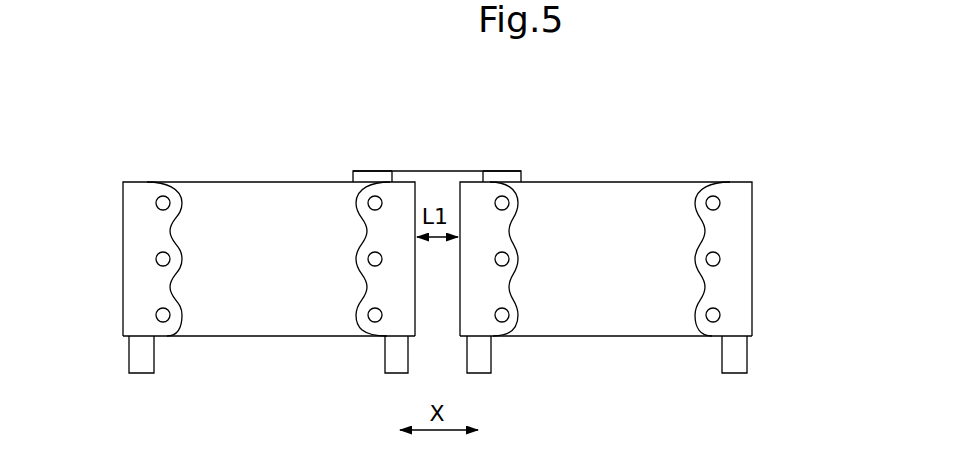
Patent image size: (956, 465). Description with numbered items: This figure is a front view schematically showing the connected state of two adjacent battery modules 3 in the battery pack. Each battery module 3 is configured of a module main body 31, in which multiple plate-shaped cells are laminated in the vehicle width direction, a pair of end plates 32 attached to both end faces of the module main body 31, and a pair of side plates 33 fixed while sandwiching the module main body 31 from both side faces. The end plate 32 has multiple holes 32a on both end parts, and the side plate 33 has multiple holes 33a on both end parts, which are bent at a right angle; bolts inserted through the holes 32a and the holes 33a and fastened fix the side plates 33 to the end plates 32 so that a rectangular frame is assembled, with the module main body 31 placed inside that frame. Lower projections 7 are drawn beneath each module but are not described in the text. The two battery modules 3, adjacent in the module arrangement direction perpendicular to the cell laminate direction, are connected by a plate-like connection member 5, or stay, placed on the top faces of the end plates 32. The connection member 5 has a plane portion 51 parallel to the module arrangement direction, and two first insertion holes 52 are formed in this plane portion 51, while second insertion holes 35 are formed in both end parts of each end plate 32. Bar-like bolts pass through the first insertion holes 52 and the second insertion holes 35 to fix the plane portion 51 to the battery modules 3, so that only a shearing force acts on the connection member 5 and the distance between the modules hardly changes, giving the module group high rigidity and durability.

The battery module 3 is at (259, 157).
The connection member 5 is at (415, 132).
The terminal 7 is at (143, 362).
The module main body 31 is at (232, 285).
The end plate 32 is at (285, 340).
The hole 32a is at (159, 197).
The side plate 33 is at (118, 207).
The hole 33a is at (172, 198).
The second insertion hole 35 is at (392, 178).
The plane portion 51 is at (353, 173).
The first insertion hole 52 is at (373, 172).